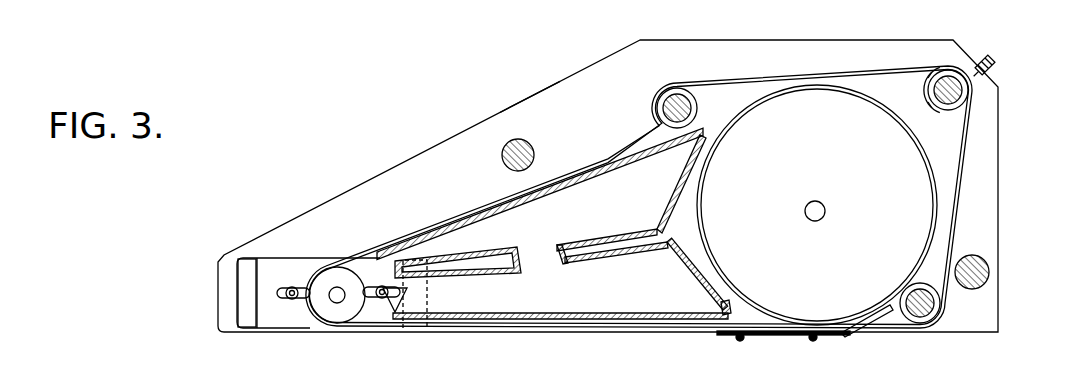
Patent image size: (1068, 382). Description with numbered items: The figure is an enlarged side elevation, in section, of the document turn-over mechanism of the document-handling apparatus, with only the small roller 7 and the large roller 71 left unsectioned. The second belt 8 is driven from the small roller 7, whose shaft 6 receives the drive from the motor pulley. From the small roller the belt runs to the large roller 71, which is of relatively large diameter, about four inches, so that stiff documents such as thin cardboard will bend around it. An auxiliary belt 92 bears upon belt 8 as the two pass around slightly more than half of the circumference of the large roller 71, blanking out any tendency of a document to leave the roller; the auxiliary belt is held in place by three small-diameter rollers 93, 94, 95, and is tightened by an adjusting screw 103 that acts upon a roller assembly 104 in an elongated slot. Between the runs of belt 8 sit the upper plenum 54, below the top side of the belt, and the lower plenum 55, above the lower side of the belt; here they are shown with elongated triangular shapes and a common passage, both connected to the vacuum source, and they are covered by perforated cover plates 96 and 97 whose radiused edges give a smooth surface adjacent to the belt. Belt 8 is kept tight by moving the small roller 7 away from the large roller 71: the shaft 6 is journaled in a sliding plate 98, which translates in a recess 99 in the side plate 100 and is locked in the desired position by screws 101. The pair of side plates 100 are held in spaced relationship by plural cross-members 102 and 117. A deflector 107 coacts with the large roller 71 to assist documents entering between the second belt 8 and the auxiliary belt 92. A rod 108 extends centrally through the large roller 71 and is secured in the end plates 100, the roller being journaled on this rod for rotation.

The shaft 6 is at (337, 302).
The small roller 7 is at (357, 306).
The second belt 8 is at (470, 217).
The upper plenum 54 is at (672, 192).
The lower plenum 55 is at (686, 284).
The large roller 71 is at (849, 166).
The auxiliary belt 92 is at (914, 140).
The roller 93 is at (938, 308).
The roller 94 is at (937, 73).
The roller 95 is at (697, 108).
The perforated cover plate 96 is at (530, 203).
The perforated cover plate 97 is at (546, 319).
The sliding plate 98 is at (310, 319).
The recess 99 is at (242, 326).
The side plate 100 is at (606, 119).
The screws 101 is at (380, 289).
The cross-member 102 is at (968, 256).
The adjusting screw 103 is at (993, 71).
The roller assembly 104 is at (927, 96).
The deflector 107 is at (880, 322).
The rod 108 is at (822, 219).
The cross-member 117 is at (541, 152).